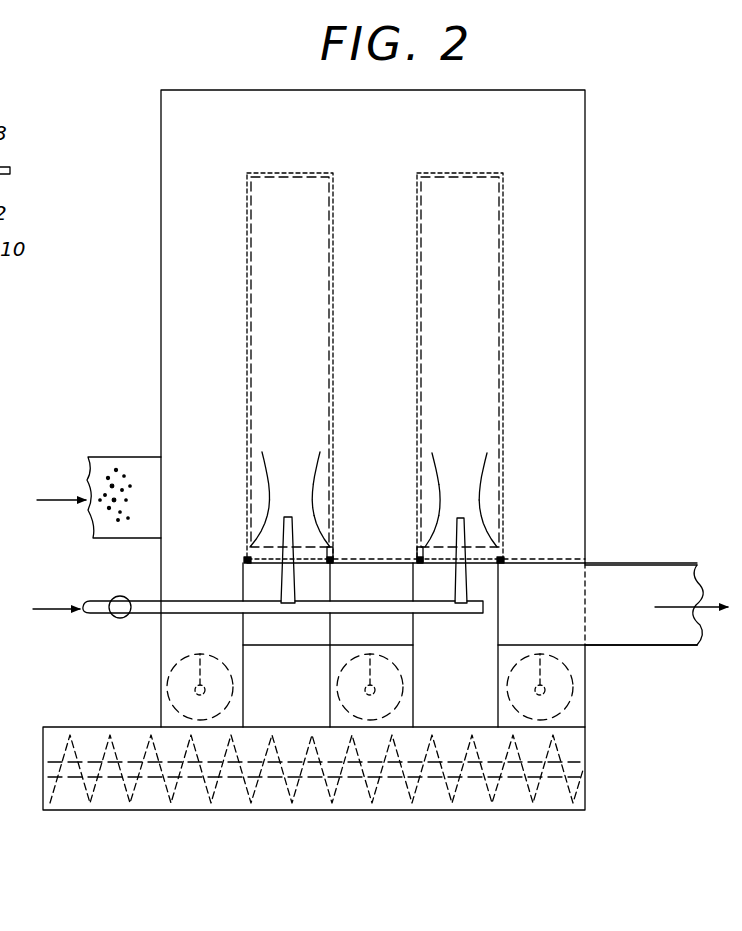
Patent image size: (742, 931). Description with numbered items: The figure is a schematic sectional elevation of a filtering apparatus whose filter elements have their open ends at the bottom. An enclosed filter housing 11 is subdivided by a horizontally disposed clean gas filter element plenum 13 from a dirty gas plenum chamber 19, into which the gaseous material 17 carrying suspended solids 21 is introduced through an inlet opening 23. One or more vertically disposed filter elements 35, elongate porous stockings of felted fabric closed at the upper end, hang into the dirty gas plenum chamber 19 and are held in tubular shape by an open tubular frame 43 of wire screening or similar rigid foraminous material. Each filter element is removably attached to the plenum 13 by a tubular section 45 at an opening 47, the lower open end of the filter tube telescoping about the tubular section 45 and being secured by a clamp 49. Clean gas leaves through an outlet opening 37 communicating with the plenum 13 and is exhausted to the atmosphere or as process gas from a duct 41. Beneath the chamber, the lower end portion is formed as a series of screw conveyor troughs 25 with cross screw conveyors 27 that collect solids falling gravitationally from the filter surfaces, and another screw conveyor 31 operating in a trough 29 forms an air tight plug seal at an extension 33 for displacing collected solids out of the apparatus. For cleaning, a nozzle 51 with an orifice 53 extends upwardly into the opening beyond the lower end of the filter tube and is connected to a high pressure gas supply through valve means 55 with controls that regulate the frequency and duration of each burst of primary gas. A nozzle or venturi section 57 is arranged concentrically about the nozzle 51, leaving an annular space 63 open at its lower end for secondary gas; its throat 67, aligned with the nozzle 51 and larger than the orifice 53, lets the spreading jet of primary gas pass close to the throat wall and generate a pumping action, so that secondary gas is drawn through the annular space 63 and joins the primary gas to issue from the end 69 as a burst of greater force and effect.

The filter housing 11 is at (592, 190).
The clean gas filter element plenum 13 is at (308, 626).
The gaseous material 17 is at (60, 500).
The dirty gas plenum chamber 19 is at (387, 257).
The suspended solids 21 is at (108, 478).
The inlet opening 23 is at (150, 503).
The screw conveyor troughs 25 is at (330, 668).
The cross screw conveyors 27 is at (168, 663).
The trough 29 is at (318, 814).
The screw conveyor 31 is at (443, 790).
The extension 33 is at (97, 727).
The filter elements 35 is at (246, 364).
The outlet opening 37 is at (570, 588).
The duct 41 is at (678, 565).
The open tubular frame 43 is at (250, 316).
The tubular section 45 is at (243, 560).
The opening 47 is at (262, 565).
The clamp 49 is at (418, 562).
The nozzle 51 is at (297, 557).
The orifice 53 is at (290, 520).
The valve means 55 is at (122, 619).
The nozzle or venturi section 57 is at (433, 470).
The annular space 63 is at (303, 528).
The throat 67 is at (448, 486).
The end 69 is at (277, 453).